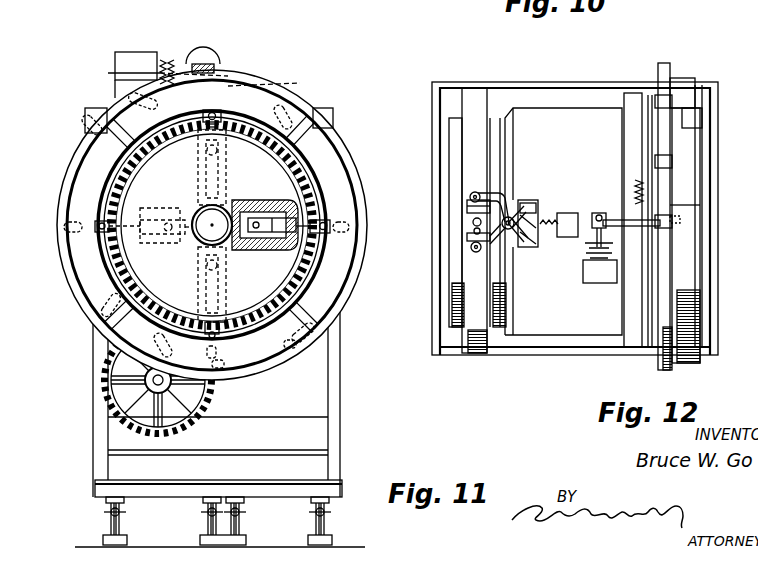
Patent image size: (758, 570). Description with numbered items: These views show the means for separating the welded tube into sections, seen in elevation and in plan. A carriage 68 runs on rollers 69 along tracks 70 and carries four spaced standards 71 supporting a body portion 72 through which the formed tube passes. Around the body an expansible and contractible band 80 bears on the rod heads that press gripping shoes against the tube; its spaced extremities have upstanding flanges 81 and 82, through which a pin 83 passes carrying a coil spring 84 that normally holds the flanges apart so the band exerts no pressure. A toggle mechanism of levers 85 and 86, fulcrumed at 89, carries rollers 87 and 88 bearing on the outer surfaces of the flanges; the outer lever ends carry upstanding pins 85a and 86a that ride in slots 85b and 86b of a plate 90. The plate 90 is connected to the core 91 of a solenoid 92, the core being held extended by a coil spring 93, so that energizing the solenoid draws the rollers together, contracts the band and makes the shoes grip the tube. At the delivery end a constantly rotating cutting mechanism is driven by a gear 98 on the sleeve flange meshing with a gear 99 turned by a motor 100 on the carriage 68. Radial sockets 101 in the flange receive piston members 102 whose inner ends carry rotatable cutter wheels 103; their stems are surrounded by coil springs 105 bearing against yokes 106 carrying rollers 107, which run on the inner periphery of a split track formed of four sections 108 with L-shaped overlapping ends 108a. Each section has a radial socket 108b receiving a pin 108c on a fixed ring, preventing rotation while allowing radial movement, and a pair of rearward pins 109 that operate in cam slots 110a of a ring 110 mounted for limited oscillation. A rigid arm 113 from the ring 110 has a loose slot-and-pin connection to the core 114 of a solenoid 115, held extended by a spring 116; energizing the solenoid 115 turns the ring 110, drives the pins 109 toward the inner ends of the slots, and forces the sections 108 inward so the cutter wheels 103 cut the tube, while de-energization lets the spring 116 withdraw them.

In FIG. 11, the carriage 68 is at (104, 488).
In FIG. 12, the carriage 68 is at (437, 105).
In FIG. 11, the rollers 69 is at (122, 514).
In FIG. 11, the tracks 70 is at (118, 530).
In FIG. 11, the standards 71 is at (106, 439).
In FIG. 11, the body portion 72 is at (333, 118).
In FIG. 12, the body portion 72 is at (560, 125).
In FIG. 12, the expansible and contractible band 80 is at (475, 138).
In FIG. 12, the upstanding integral flange 81 is at (467, 206).
In FIG. 12, the upstanding integral flange 82 is at (467, 237).
In FIG. 12, the pin 83 is at (473, 223).
In FIG. 12, the coil spring 84 is at (474, 232).
In FIG. 12, the lever 85 is at (486, 195).
In FIG. 12, the upstanding pin 85a is at (524, 247).
In FIG. 12, the slot 85b is at (538, 246).
In FIG. 12, the lever 86 is at (490, 250).
In FIG. 12, the upstanding pin 86a is at (536, 204).
In FIG. 12, the slot 86b is at (540, 196).
In FIG. 12, the roller 87 is at (470, 196).
In FIG. 12, the roller 88 is at (471, 249).
In FIG. 12, the fulcrum 89 is at (518, 200).
In FIG. 12, the plate 90 is at (546, 232).
In FIG. 12, the core 91 is at (560, 220).
In FIG. 11, the solenoid 92 is at (210, 58).
In FIG. 12, the solenoid 92 is at (585, 214).
In FIG. 12, the coil spring 93 is at (567, 225).
In FIG. 11, the gear 98 is at (132, 281).
In FIG. 11, the gear 99 is at (106, 363).
In FIG. 11, the motor 100 is at (126, 389).
In FIG. 11, the radial sockets 101 is at (143, 214).
In FIG. 11, the piston members 102 is at (264, 236).
In FIG. 11, the cutter wheels 103 is at (253, 205).
In FIG. 11, the coil springs 105 is at (200, 148).
In FIG. 11, the yokes 106 is at (203, 112).
In FIG. 11, the rollers 107 is at (325, 221).
In FIG. 11, the band sections 108 is at (322, 142).
In FIG. 12, the band sections 108 is at (683, 88).
In FIG. 12, the L-shaped overlapping ends 108a is at (685, 118).
In FIG. 11, the radial socket 108b is at (284, 345).
In FIG. 11, the pin 108c is at (222, 368).
In FIG. 11, the rearwardly extending pins 109 is at (300, 102).
In FIG. 12, the rearwardly extending pins 109 is at (672, 162).
In FIG. 11, the ring 110 is at (240, 81).
In FIG. 12, the ring 110 is at (662, 75).
In FIG. 11, the cam slots 110a is at (290, 84).
In FIG. 12, the rigid arm 113 is at (672, 205).
In FIG. 11, the core 114 is at (156, 96).
In FIG. 12, the core 114 is at (590, 252).
In FIG. 11, the solenoid 115 is at (130, 62).
In FIG. 12, the solenoid 115 is at (592, 270).
In FIG. 12, the spring 116 is at (636, 195).